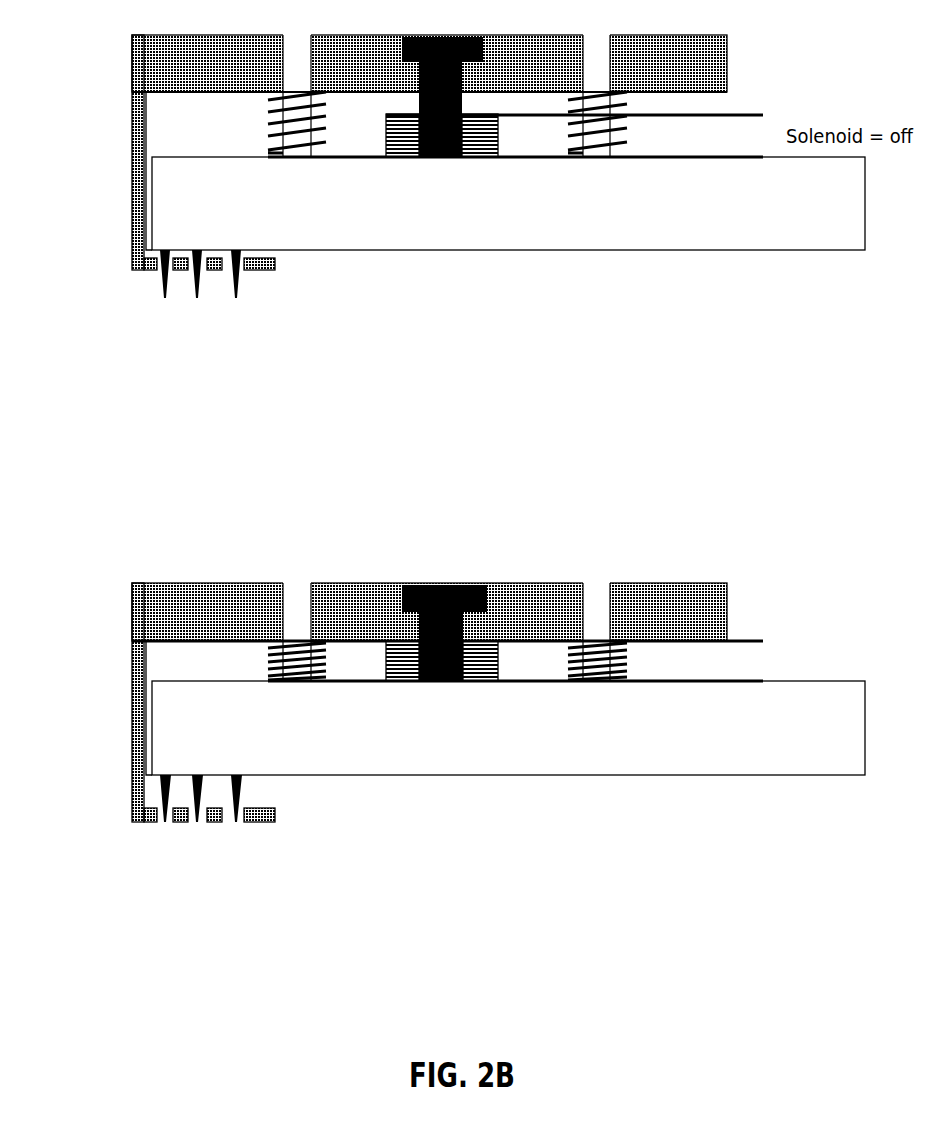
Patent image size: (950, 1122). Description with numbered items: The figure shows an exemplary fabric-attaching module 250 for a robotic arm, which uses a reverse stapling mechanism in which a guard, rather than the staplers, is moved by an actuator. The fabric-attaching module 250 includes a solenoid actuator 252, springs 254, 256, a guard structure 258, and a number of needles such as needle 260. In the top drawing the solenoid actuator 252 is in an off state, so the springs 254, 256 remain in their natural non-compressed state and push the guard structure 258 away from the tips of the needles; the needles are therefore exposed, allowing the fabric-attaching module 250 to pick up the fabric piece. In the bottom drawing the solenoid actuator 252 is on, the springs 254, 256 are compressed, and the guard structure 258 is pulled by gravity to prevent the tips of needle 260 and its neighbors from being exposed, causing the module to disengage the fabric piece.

The fabric-attaching module 250 is at (487, 362).
The solenoid actuator 252 is at (490, 142).
The spring 254 is at (307, 138).
The spring 256 is at (624, 133).
The guard structure 258 is at (132, 203).
The needle 260 is at (236, 284).